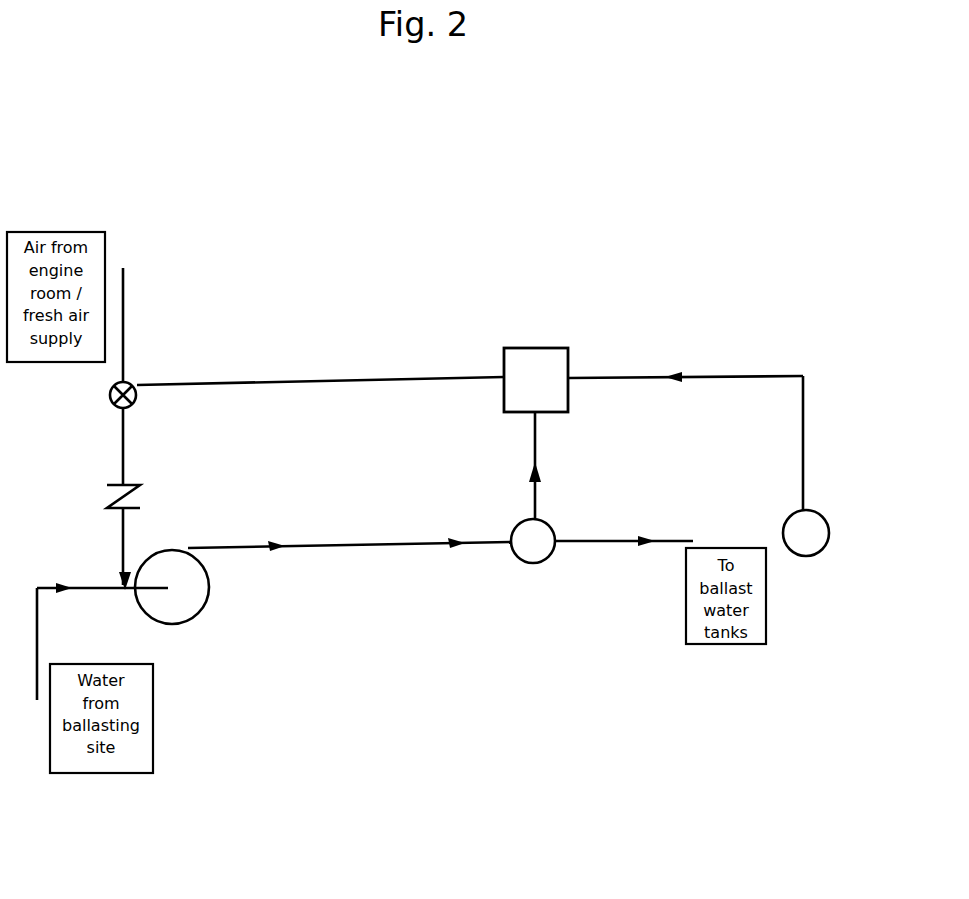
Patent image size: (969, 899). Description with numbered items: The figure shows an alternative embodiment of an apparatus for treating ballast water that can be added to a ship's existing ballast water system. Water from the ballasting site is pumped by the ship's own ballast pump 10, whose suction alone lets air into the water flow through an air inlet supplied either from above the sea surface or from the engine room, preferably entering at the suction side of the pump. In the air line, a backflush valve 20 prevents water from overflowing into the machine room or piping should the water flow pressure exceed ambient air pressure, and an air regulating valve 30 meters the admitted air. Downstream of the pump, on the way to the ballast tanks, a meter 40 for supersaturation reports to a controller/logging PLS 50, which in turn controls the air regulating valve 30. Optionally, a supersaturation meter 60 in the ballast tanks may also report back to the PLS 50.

The ballast pump 10 is at (205, 617).
The backflush valve 20 is at (143, 490).
The air regulating valve 30 is at (140, 403).
The meter for super saturation 40 is at (556, 563).
The controller/logging PLS 50 is at (560, 420).
The supersaturation meter in the ballast tanks 60 is at (822, 553).